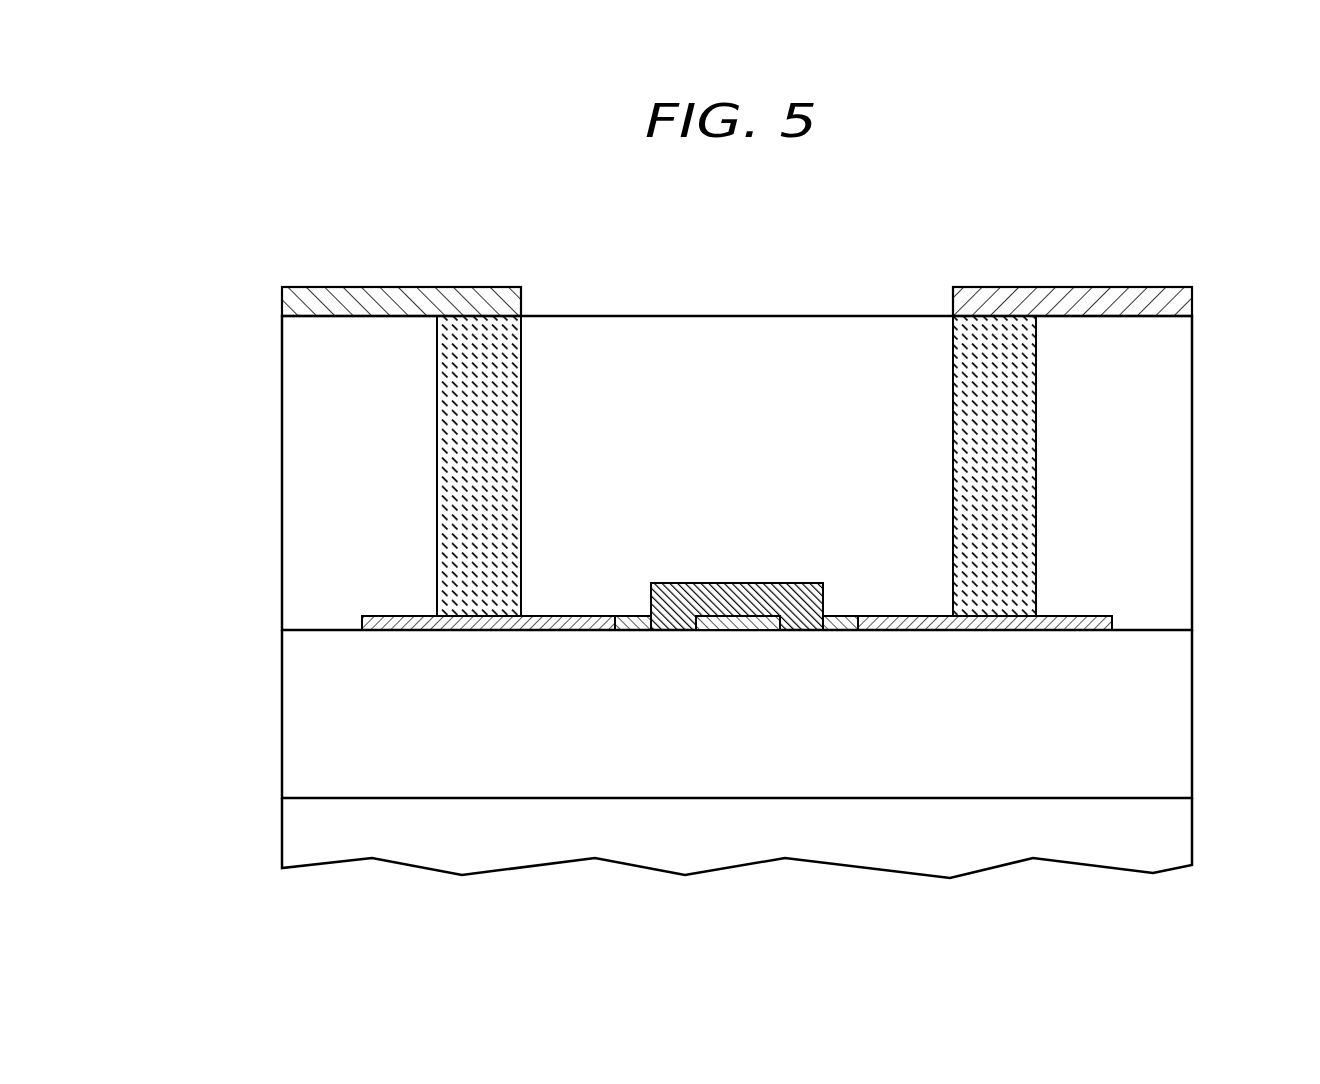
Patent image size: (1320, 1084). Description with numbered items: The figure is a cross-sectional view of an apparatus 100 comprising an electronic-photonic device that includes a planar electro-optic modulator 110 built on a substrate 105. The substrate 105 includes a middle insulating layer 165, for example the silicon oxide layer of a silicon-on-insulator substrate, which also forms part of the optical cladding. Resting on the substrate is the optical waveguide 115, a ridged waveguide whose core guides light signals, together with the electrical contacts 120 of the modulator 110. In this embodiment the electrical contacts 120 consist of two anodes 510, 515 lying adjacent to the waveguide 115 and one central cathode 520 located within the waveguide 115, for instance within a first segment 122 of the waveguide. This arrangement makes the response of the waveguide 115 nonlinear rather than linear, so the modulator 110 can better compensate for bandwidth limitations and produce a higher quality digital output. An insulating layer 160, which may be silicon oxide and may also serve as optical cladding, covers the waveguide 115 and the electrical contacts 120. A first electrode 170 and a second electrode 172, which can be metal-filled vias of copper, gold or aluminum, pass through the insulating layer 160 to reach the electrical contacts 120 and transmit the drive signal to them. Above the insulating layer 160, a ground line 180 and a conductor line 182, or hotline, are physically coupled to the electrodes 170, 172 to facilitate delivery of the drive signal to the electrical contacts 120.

The apparatus 100 is at (200, 199).
The substrate 105 is at (282, 835).
The electro-optic modulator 110 is at (1220, 230).
The optical waveguide 115 is at (664, 537).
The electrical contacts 120 is at (430, 701).
The first segment of the waveguide 122 is at (668, 622).
The insulating layer 160 is at (282, 416).
The middle insulating layer 165 is at (282, 730).
The first electrode 170 is at (521, 392).
The second electrode 172 is at (958, 392).
The ground line 180 is at (282, 298).
The conductor line 182 is at (1192, 298).
The anode 510 is at (478, 631).
The anode 515 is at (985, 631).
The central cathode 520 is at (733, 631).